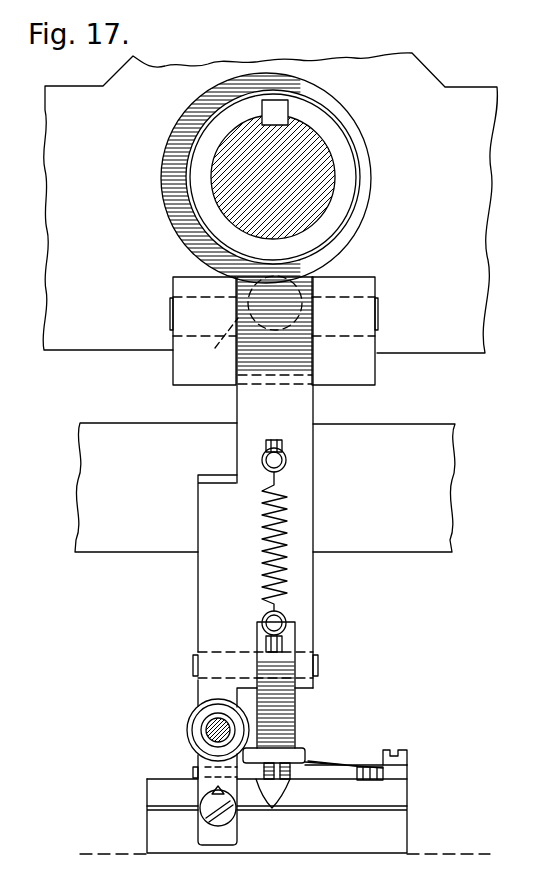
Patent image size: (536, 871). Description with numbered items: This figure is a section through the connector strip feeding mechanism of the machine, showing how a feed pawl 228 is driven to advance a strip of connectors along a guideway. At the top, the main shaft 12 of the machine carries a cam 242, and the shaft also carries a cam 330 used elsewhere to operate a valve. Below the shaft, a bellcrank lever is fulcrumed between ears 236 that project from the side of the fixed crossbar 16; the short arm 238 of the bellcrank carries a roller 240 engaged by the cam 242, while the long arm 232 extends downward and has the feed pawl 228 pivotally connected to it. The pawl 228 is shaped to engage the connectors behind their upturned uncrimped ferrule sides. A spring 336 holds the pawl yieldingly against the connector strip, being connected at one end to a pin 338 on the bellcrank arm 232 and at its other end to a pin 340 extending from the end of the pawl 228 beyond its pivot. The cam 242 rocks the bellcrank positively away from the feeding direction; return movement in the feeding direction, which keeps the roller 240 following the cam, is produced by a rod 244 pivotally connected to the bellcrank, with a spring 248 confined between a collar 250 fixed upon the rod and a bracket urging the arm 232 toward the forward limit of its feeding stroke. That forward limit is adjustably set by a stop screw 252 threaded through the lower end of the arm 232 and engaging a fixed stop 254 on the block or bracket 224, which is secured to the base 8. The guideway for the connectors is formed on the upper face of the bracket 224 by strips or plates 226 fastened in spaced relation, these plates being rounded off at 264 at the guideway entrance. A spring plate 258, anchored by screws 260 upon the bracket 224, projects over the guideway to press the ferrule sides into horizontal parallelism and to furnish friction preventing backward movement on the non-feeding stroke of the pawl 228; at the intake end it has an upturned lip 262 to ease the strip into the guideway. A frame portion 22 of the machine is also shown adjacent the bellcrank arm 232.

The base 8 is at (430, 855).
The main shaft 12 is at (310, 172).
The fixed crossbar 16 is at (418, 80).
The frame 22 is at (425, 432).
The block or bracket 224 is at (395, 825).
The strips or plates 226 is at (195, 772).
The feed pawl 228 is at (290, 700).
The long arm of bellcrank lever 232 is at (300, 402).
The ears 236 is at (186, 283).
The short arm of bellcrank 238 is at (300, 284).
The roller 240 is at (212, 342).
The cam 242 is at (175, 168).
The rod 244 is at (205, 738).
The spring 248 is at (195, 720).
The collar 250 is at (215, 701).
The stop screw 252 is at (213, 820).
The fixed stop 254 is at (185, 792).
The spring plate 258 is at (338, 765).
The screws 260 is at (400, 753).
The upturned lip 262 is at (340, 733).
The rounded-off portion 264 is at (268, 802).
The cam 330 is at (195, 663).
The spring 336 is at (262, 555).
The pin 338 is at (270, 447).
The pin 340 is at (268, 640).